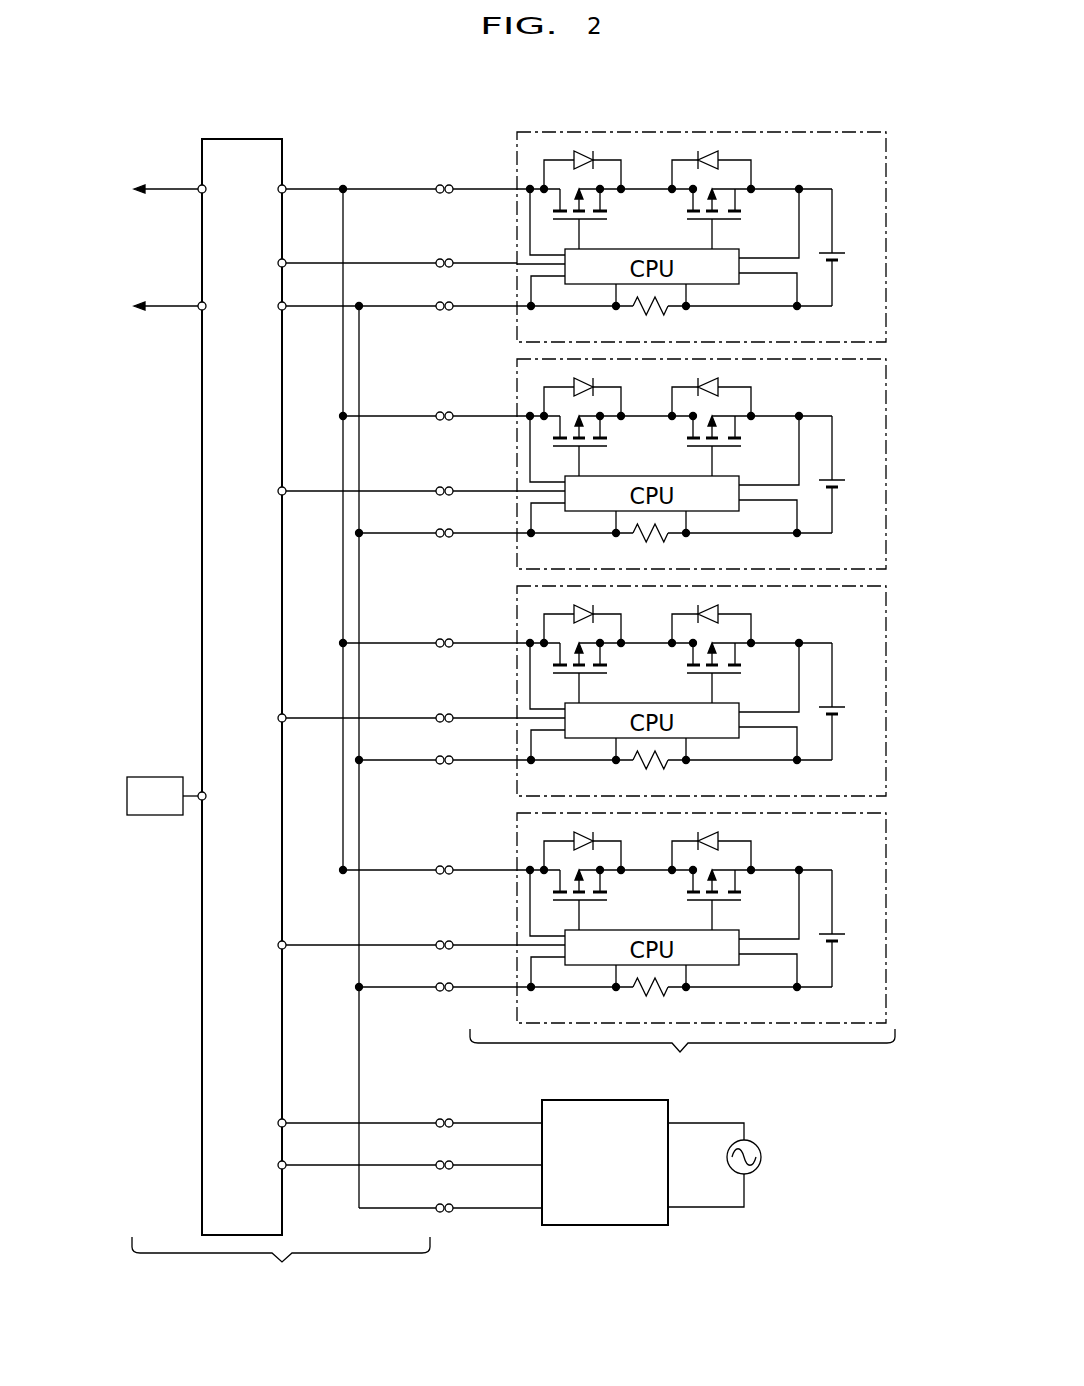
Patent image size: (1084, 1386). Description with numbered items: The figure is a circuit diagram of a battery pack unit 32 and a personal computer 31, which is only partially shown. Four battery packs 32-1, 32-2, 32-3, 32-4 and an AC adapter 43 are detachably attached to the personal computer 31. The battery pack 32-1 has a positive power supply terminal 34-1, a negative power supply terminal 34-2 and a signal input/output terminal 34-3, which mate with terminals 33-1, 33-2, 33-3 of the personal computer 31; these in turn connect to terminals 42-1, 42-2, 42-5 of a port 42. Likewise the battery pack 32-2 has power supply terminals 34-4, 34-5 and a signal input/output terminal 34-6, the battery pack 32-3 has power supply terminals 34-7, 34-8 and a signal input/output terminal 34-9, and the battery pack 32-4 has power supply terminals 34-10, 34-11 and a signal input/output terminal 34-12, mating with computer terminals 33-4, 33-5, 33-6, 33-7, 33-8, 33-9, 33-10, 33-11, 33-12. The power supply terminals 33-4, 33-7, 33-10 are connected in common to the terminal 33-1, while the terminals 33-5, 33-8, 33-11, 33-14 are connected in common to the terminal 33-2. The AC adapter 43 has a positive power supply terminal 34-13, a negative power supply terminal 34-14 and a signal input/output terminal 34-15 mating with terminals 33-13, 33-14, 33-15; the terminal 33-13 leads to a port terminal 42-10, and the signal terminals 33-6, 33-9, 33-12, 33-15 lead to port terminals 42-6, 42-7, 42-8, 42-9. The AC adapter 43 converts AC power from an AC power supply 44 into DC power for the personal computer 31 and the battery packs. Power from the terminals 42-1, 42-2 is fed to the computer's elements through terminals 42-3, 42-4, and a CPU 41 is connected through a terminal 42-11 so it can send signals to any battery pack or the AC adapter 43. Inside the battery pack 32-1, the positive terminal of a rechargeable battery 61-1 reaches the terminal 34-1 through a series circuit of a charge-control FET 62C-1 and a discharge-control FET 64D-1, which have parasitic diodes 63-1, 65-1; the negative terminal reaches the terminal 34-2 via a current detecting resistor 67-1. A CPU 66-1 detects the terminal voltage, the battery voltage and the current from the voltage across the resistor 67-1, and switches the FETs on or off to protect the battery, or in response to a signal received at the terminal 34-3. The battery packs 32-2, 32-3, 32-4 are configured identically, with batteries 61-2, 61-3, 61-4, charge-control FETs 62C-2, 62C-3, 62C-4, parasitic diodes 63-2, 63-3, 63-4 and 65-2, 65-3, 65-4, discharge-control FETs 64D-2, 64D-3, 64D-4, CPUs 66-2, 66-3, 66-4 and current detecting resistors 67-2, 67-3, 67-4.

The personal computer 31 is at (281, 1265).
The battery pack unit 32 is at (682, 1056).
The battery pack 32-1 is at (734, 236).
The battery pack 32-2 is at (734, 463).
The battery pack 32-3 is at (734, 690).
The battery pack 32-4 is at (734, 917).
The terminal 33-1 is at (361, 179).
The terminal 33-2 is at (361, 296).
The terminal 33-3 is at (361, 252).
The power supply terminal 33-4 is at (388, 406).
The power supply terminal 33-5 is at (396, 523).
The signal input/output terminal 33-6 is at (361, 480).
The power supply terminal 33-7 is at (388, 633).
The power supply terminal 33-8 is at (396, 750).
The signal input/output terminal 33-9 is at (361, 707).
The power supply terminal 33-10 is at (390, 860).
The power supply terminal 33-11 is at (397, 977).
The signal input/output terminal 33-12 is at (361, 934).
The terminal 33-13 is at (361, 1112).
The terminal 33-14 is at (397, 1197).
The signal input/output terminal 33-15 is at (361, 1154).
The positive power supply terminal 34-1 is at (476, 179).
The negative power supply terminal 34-2 is at (476, 296).
The signal input/output terminal 34-3 is at (476, 253).
The power supply terminal 34-4 is at (476, 406).
The power supply terminal 34-5 is at (476, 523).
The signal input/output terminal 34-6 is at (476, 481).
The power supply terminal 34-7 is at (476, 633).
The power supply terminal 34-8 is at (476, 750).
The signal input/output terminal 34-9 is at (476, 708).
The power supply terminal 34-10 is at (476, 860).
The power supply terminal 34-11 is at (476, 977).
The signal input/output terminal 34-12 is at (476, 935).
The positive power supply terminal 34-13 is at (489, 1113).
The negative power supply terminal 34-14 is at (489, 1198).
The signal input/output terminal 34-15 is at (489, 1155).
The CPU 41 is at (157, 815).
The port 42 is at (201, 406).
The terminal 42-1 is at (304, 179).
The terminal 42-2 is at (304, 296).
The terminal 42-3 is at (200, 187).
The terminal 42-4 is at (200, 304).
The terminal 42-5 is at (304, 253).
The terminal 42-6 is at (305, 481).
The terminal 42-7 is at (305, 708).
The terminal 42-8 is at (305, 935).
The terminal 42-9 is at (305, 1155).
The terminal 42-10 is at (312, 1113).
The terminal 42-11 is at (200, 792).
The AC adapter 43 is at (632, 1226).
The AC power supply 44 is at (761, 1157).
The rechargeable battery 61-1 is at (850, 247).
The rechargeable battery 61-2 is at (850, 474).
The rechargeable battery 61-3 is at (850, 701).
The rechargeable battery 61-4 is at (850, 928).
The charge-control FET 62C-1 is at (736, 219).
The charge-control FET 62C-2 is at (736, 446).
The charge-control FET 62C-3 is at (736, 673).
The charge-control FET 62C-4 is at (736, 900).
The parasitic diode 63-1 is at (720, 163).
The parasitic diode 63-2 is at (720, 390).
The parasitic diode 63-3 is at (720, 617).
The parasitic diode 63-4 is at (720, 844).
The discharge-control FET 64D-1 is at (600, 219).
The discharge-control FET 64D-2 is at (600, 446).
The discharge-control FET 64D-3 is at (600, 673).
The discharge-control FET 64D-4 is at (600, 900).
The parasitic diode 65-1 is at (593, 163).
The parasitic diode 65-2 is at (593, 390).
The parasitic diode 65-3 is at (593, 617).
The parasitic diode 65-4 is at (593, 844).
The CPU 66-1 is at (677, 278).
The CPU 66-2 is at (677, 505).
The CPU 66-3 is at (677, 732).
The CPU 66-4 is at (677, 959).
The current detecting resistor 67-1 is at (660, 311).
The current detecting resistor 67-2 is at (660, 538).
The current detecting resistor 67-3 is at (660, 765).
The current detecting resistor 67-4 is at (660, 992).